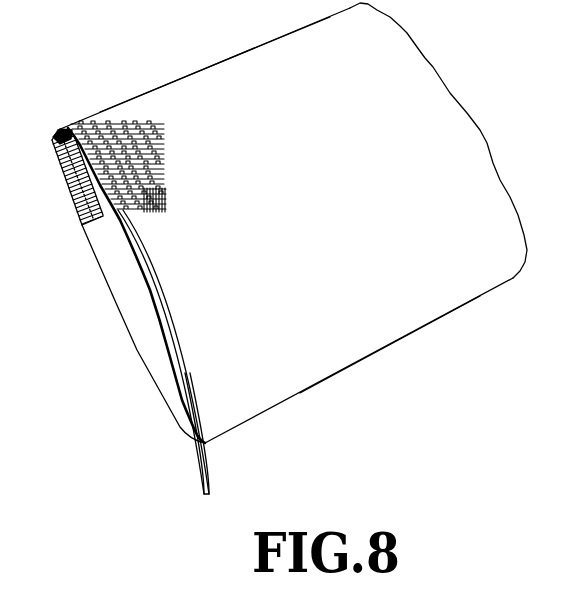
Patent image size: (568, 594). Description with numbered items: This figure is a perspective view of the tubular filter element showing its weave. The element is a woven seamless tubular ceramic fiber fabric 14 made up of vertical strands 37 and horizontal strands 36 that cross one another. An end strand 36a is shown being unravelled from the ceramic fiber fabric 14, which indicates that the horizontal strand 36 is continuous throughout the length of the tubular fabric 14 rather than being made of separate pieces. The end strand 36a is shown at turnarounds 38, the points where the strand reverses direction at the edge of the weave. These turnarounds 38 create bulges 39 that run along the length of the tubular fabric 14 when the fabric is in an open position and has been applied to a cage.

The woven seamless tubular ceramic fiber fabric 14 is at (222, 70).
The horizontal strands 36 is at (165, 190).
The end strand 36a is at (200, 480).
The vertical strands 37 is at (140, 125).
The turnarounds 38 is at (72, 132).
The bulges 39 is at (175, 80).